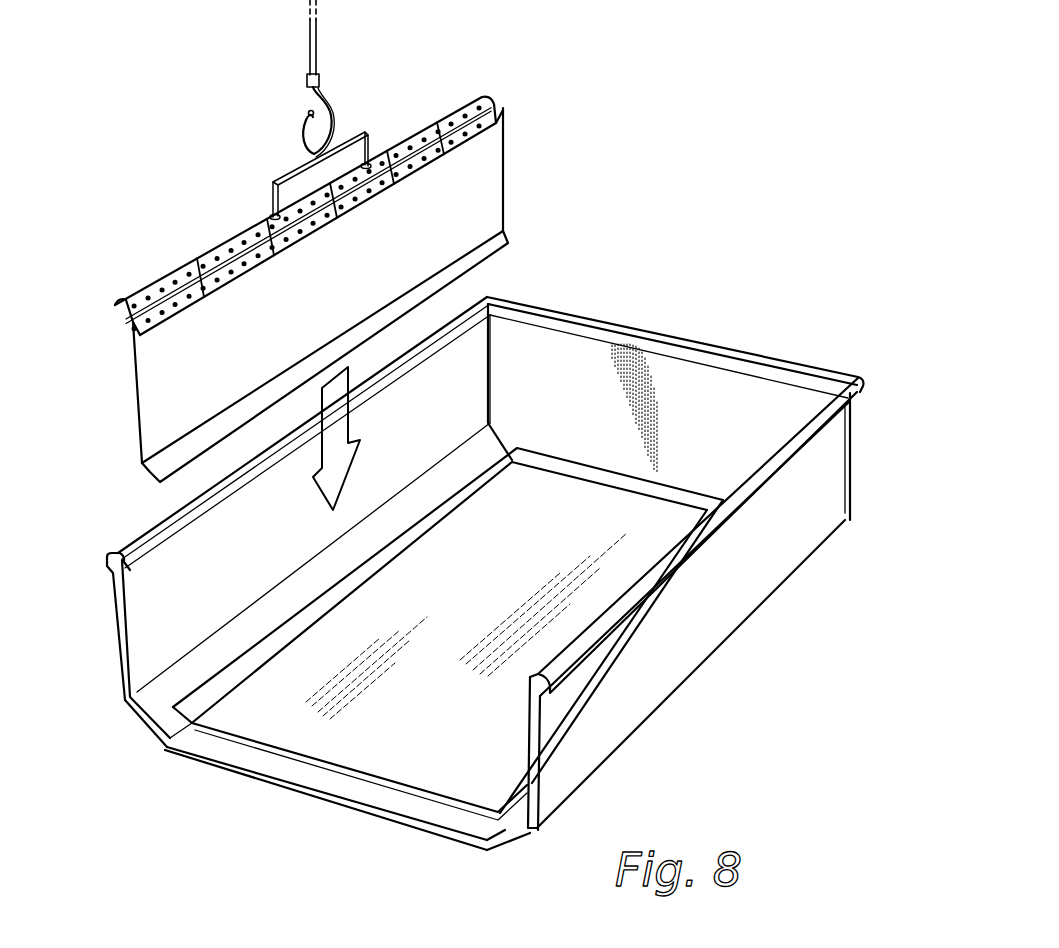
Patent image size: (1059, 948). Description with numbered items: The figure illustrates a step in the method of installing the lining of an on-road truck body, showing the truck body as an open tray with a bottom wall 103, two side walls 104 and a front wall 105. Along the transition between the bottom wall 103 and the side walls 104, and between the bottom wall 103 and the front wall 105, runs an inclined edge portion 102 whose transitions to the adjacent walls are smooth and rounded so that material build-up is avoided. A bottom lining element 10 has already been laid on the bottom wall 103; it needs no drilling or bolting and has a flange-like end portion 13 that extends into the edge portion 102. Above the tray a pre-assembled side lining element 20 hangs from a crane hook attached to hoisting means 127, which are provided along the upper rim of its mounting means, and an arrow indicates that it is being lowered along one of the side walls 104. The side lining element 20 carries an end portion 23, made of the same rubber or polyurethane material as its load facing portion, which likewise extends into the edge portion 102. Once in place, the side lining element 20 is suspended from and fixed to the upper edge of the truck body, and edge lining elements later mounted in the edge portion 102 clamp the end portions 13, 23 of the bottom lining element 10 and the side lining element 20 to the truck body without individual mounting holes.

The bottom lining element 10 is at (461, 598).
The flange-like end portion 13 is at (240, 667).
The side lining element 20 is at (387, 267).
The end portion 23 is at (158, 468).
The edge portion 102 is at (152, 707).
The bottom wall 103 is at (233, 748).
The side walls 104 is at (132, 610).
The front wall 105 is at (723, 397).
The hoisting means 127 is at (268, 213).